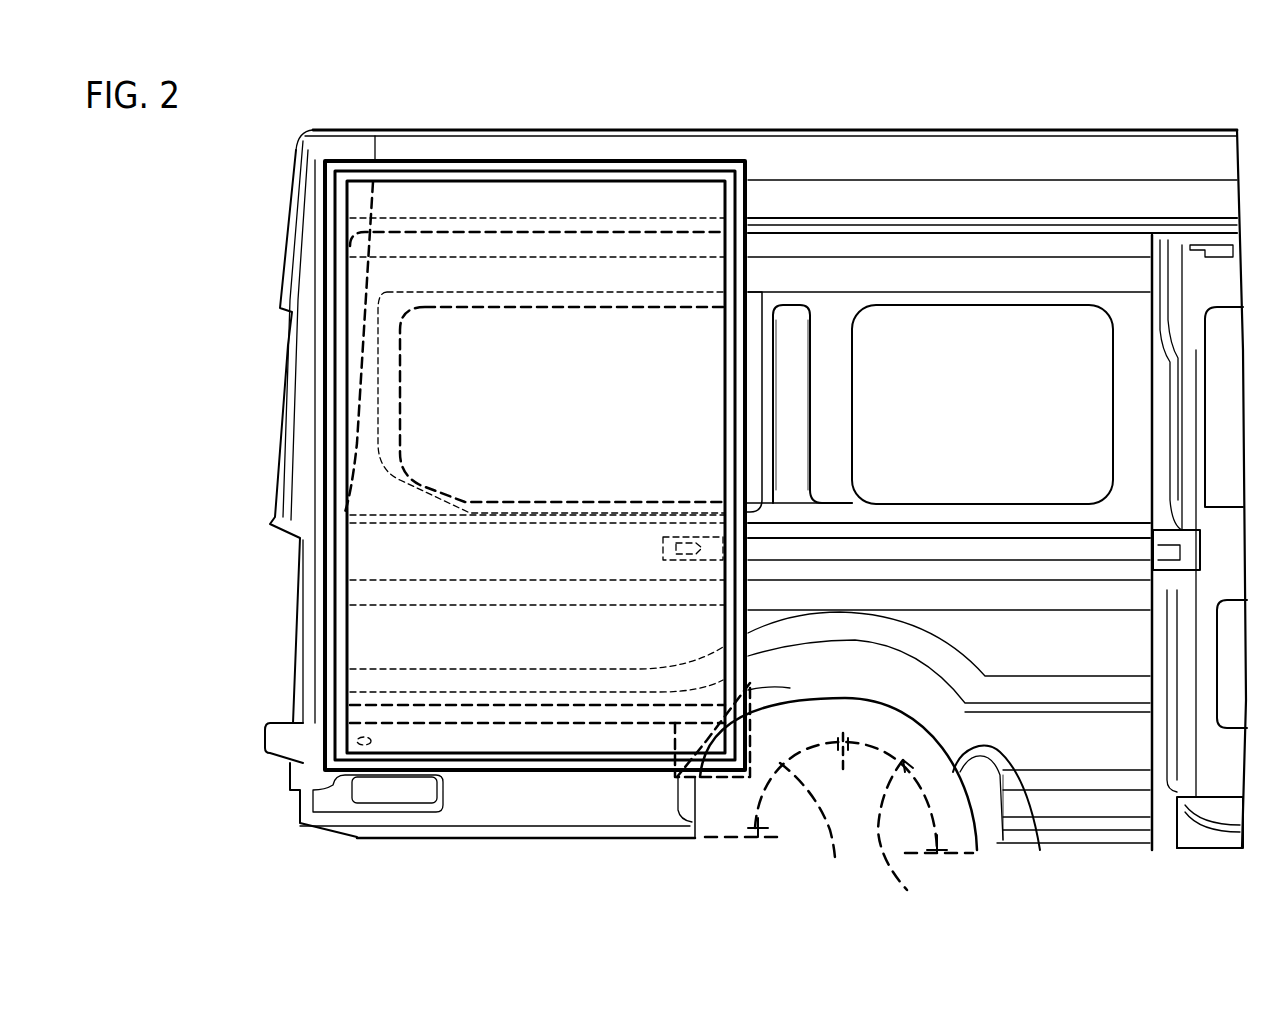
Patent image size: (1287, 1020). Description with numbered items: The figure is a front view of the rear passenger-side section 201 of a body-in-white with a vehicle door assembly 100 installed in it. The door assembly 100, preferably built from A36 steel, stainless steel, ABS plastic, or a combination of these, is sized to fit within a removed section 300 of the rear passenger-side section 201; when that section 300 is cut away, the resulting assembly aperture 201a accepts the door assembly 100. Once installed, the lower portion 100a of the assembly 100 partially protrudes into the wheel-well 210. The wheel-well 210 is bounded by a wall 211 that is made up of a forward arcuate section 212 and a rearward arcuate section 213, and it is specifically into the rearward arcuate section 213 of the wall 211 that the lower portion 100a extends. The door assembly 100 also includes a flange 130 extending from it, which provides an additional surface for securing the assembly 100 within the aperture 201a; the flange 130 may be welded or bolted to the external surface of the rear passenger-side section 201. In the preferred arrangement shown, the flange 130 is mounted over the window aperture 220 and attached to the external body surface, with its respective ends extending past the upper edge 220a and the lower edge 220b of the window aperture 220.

The rear passenger-side section 201 is at (1137, 105).
The assembly aperture 201a is at (697, 160).
The removed section 300 is at (452, 206).
The vehicle door assembly 100 is at (488, 766).
The lower portion 100a is at (750, 683).
The flange 130 is at (773, 350).
The window aperture 220 is at (812, 337).
The upper edge 220a is at (774, 350).
The lower edge 220b is at (783, 500).
The wheel-well 210 is at (781, 868).
The wall 211 is at (1003, 790).
The forward arcuate section 212 is at (907, 890).
The rearward arcuate section 213 is at (817, 832).